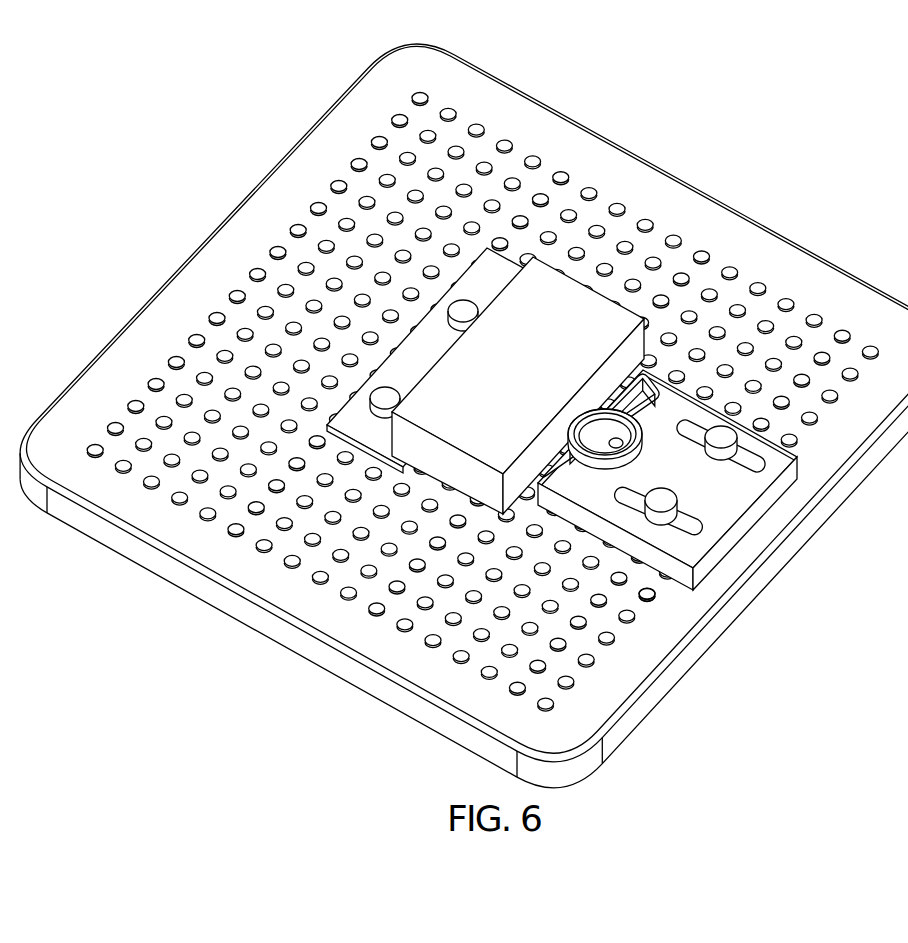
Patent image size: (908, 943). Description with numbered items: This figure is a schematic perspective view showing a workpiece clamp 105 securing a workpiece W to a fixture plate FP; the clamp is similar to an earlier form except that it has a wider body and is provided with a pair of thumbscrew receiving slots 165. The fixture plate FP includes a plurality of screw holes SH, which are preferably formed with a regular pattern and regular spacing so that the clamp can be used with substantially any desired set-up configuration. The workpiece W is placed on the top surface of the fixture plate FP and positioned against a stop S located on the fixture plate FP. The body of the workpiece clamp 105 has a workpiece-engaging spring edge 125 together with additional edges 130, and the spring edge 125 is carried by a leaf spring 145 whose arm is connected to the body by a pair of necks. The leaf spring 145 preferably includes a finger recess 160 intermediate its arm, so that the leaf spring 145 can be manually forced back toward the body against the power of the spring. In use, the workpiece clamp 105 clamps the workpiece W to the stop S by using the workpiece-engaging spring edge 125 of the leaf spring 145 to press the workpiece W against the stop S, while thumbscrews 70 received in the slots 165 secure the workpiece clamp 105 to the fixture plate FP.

The fixture plate FP is at (695, 212).
The screw holes SH is at (574, 690).
The workpiece clamp 105 is at (658, 610).
The stop S is at (488, 264).
The workpiece W is at (457, 388).
The additional edges 130 is at (748, 410).
The leaf spring 145 is at (608, 378).
The workpiece-engaging spring edge 125 is at (572, 412).
The finger recess 160 is at (586, 437).
The slots 165 is at (765, 462).
The thumbscrews 70 is at (716, 430).